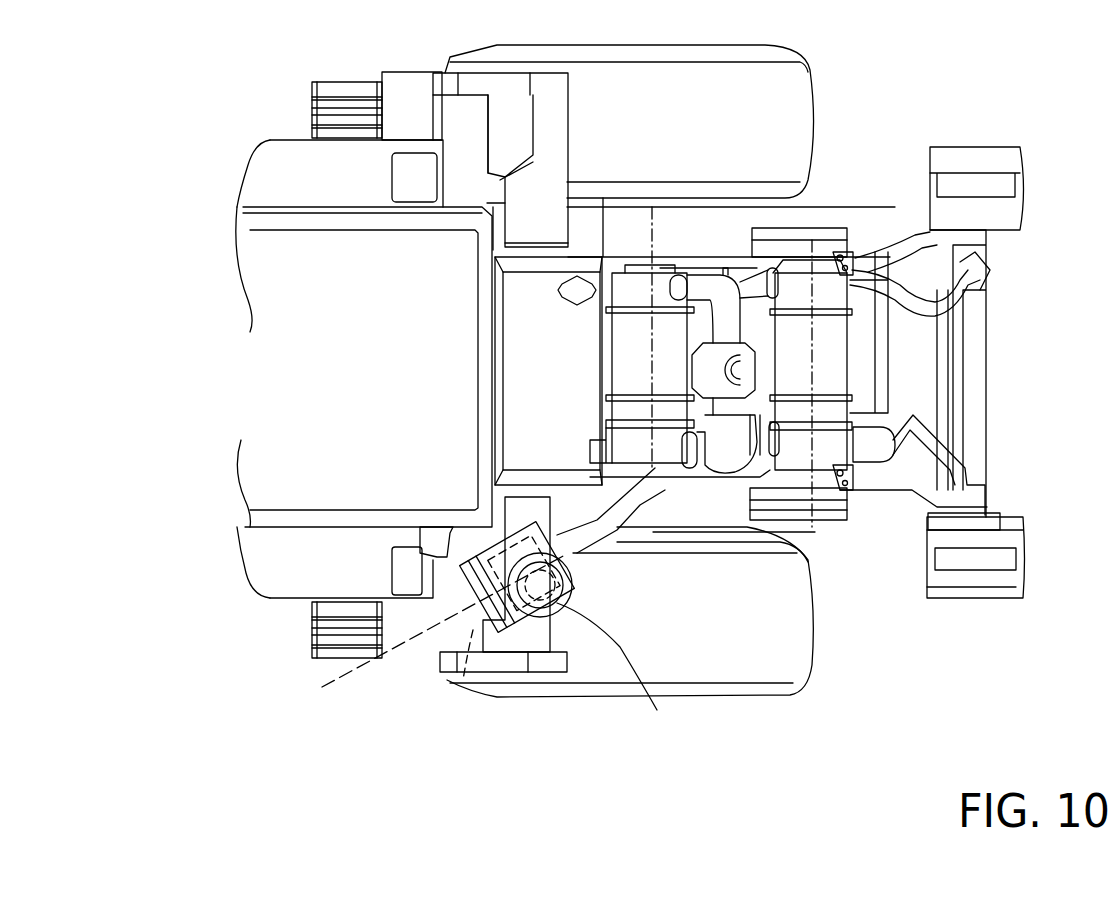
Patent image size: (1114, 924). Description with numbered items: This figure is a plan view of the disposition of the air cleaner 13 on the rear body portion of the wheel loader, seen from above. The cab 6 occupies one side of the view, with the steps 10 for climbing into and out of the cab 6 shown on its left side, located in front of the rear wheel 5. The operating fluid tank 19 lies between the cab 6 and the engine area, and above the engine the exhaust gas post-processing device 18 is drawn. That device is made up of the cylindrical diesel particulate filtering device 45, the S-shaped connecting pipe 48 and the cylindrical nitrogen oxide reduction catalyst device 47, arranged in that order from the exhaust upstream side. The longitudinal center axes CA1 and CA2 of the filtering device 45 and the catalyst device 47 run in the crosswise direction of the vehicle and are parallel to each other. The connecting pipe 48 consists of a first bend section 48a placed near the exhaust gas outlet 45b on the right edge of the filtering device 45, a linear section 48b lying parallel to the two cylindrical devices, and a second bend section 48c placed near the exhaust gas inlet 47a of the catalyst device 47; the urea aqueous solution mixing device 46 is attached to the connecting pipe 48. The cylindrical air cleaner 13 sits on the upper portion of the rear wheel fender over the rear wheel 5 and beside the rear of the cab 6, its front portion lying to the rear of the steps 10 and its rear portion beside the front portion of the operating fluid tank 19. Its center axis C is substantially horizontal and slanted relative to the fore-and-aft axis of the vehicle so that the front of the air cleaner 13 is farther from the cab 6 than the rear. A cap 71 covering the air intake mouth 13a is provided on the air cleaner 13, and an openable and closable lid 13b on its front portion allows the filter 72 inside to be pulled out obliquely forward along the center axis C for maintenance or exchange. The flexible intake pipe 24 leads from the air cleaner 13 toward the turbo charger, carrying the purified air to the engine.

The rear wheel 5 is at (788, 668).
The cab 6 is at (310, 278).
The steps 10 is at (312, 623).
The air cleaner 13 is at (530, 622).
The air intake mouth 13a is at (560, 623).
The lid 13b is at (465, 645).
The exhaust gas post-processing device 18 is at (817, 323).
The operating fluid tank 19 is at (577, 265).
The intake pipe 24 is at (760, 532).
The diesel particulate filtering device 45 is at (1015, 263).
The exhaust gas outlet 45b is at (732, 285).
The urea aqueous solution mixing device 46 is at (722, 268).
The nitrogen oxide reduction catalyst device 47 is at (640, 355).
The exhaust gas inlet 47a is at (690, 455).
The connecting pipe 48 is at (693, 403).
The first bend section 48a is at (712, 372).
The linear section 48b is at (752, 390).
The second bend section 48c is at (870, 424).
The cap 71 is at (657, 710).
The filter 72 is at (462, 690).
The center axis C is at (345, 690).
The longitudinal center axis CA1 is at (815, 533).
The longitudinal center axis CA2 is at (683, 483).